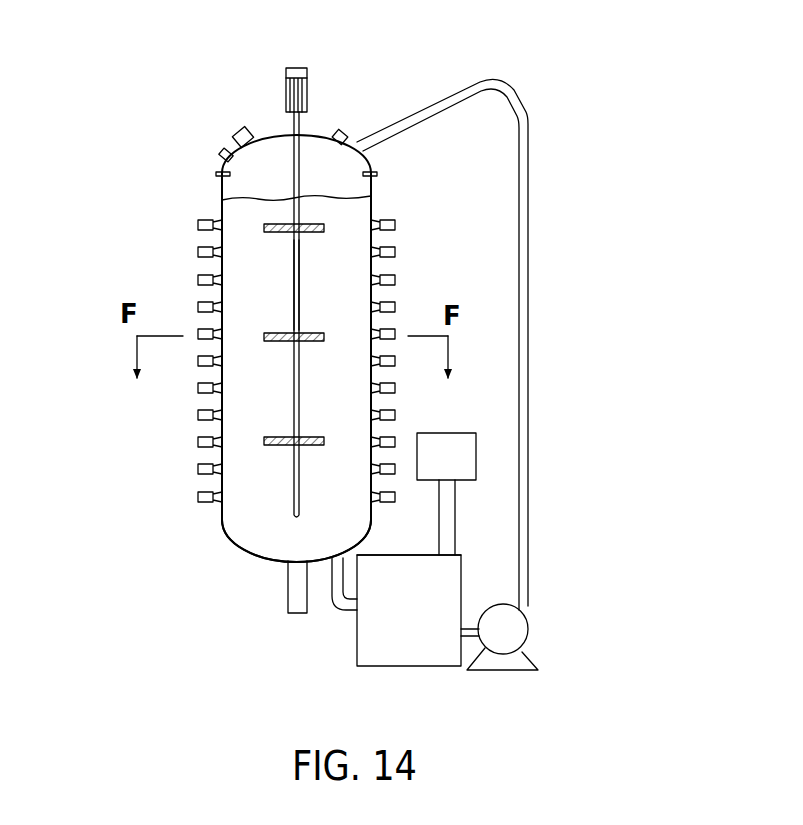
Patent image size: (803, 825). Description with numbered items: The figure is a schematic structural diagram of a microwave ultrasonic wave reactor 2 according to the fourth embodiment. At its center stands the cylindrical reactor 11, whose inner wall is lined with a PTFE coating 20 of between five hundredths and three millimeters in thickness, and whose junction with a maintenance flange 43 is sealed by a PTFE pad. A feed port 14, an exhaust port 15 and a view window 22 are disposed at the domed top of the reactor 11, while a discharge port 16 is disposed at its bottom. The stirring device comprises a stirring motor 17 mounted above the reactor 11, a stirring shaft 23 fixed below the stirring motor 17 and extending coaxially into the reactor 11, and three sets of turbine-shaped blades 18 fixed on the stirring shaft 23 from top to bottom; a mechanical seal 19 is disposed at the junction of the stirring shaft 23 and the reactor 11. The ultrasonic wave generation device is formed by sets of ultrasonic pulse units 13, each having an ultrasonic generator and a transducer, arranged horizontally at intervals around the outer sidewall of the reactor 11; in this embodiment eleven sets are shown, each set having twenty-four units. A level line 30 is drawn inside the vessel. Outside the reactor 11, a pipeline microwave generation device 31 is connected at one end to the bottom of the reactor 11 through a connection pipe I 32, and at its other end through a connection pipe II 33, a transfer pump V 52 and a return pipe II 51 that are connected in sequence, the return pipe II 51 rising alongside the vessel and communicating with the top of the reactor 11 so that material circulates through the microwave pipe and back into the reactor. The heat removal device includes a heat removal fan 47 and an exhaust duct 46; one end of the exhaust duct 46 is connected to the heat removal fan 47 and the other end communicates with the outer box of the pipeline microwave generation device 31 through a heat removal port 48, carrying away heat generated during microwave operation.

The microwave ultrasonic wave reactor 2 is at (136, 58).
The reactor 11 is at (233, 550).
The ultrasonic pulse units 13 is at (207, 392).
The feed port 14 is at (236, 130).
The exhaust port 15 is at (341, 137).
The discharge port 16 is at (297, 587).
The stirring motor 17 is at (290, 88).
The blades 18 is at (314, 336).
The mechanical seal 19 is at (299, 137).
The PTFE coating 20 is at (257, 553).
The view window 22 is at (224, 152).
The stirring shaft 23 is at (292, 258).
The liquid level 30 is at (250, 200).
The pipeline microwave generation device 31 is at (367, 647).
The connection pipe I 32 is at (338, 600).
The connection pipe II 33 is at (470, 638).
The maintenance flange 43 is at (222, 176).
The exhaust duct 46 is at (445, 528).
The heat removal fan 47 is at (445, 452).
The heat removal port 48 is at (462, 554).
The return pipe II 51 is at (528, 352).
The transfer pump V 52 is at (508, 637).